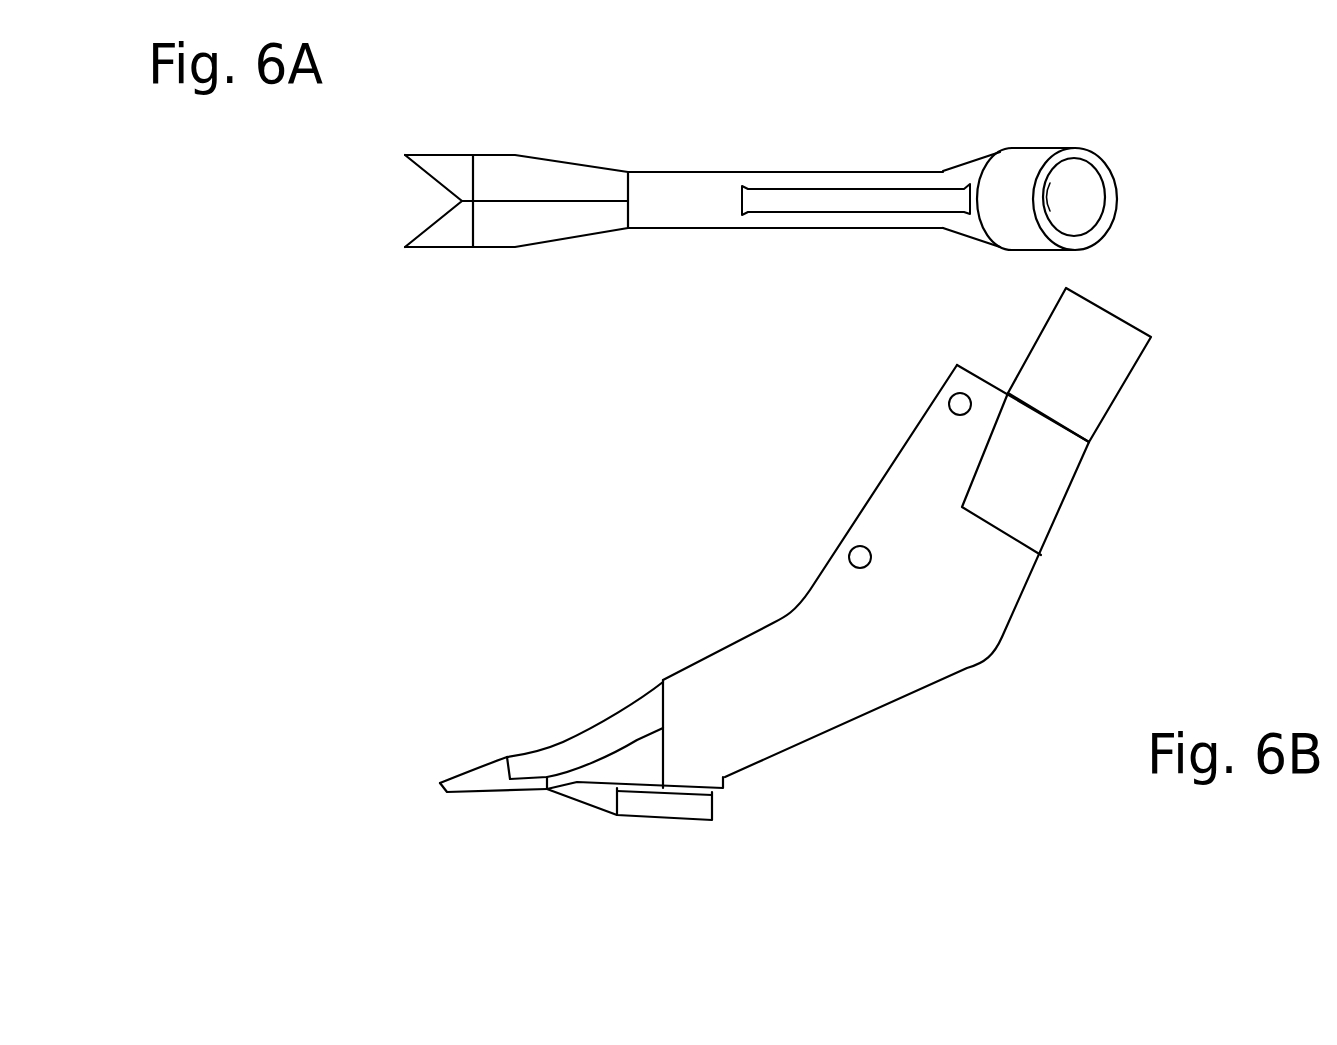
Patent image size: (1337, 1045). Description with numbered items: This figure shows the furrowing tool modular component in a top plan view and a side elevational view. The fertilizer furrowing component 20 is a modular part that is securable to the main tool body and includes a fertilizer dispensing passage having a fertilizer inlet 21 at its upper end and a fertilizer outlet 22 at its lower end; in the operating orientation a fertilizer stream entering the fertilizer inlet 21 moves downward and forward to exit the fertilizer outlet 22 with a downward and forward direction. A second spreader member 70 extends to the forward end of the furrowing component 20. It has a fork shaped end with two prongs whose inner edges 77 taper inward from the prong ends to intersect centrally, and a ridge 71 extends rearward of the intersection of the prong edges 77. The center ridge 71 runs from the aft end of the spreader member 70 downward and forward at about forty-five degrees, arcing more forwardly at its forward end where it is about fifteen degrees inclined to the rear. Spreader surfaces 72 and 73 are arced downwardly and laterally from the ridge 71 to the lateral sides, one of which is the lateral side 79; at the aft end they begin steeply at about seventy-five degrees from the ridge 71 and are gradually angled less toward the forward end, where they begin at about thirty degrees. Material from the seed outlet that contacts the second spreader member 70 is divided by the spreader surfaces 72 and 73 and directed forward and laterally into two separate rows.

In FIG. 6A, the fertilizer furrowing component 20 is at (703, 172).
In FIG. 6B, the fertilizer furrowing component 20 is at (685, 589).
In FIG. 6A, the fertilizer inlet 21 is at (1090, 177).
In FIG. 6B, the fertilizer inlet 21 is at (1115, 313).
In FIG. 6B, the fertilizer outlet 22 is at (980, 737).
In FIG. 6B, the second spreader member 70 is at (650, 762).
In FIG. 6A, the ridge 71 is at (577, 202).
In FIG. 6A, the spreader surface 72 is at (525, 173).
In FIG. 6A, the spreader surface 73 is at (498, 232).
In FIG. 6B, the spreader surface 73 is at (582, 748).
In FIG. 6A, the inner edges 77 is at (453, 153).
In FIG. 6B, the inner edges 77 is at (495, 772).
In FIG. 6B, the lateral side 79 is at (533, 788).